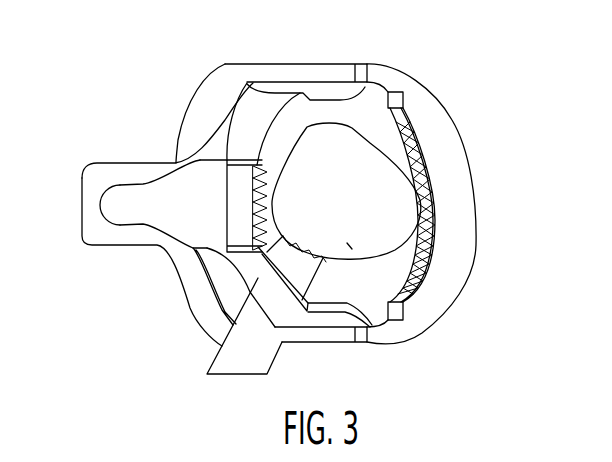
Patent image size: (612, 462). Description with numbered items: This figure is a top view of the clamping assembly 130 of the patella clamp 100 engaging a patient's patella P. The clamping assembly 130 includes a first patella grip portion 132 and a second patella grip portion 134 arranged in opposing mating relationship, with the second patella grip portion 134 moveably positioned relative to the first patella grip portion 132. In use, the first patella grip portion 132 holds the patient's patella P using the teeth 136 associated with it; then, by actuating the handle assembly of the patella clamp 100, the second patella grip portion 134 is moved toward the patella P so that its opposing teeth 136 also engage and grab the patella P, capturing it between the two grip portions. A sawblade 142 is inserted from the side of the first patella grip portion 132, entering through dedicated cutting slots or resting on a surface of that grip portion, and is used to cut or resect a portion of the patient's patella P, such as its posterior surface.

The patella clamp 100 is at (82, 180).
The clamping assembly 130 is at (458, 65).
The first patella grip portion 132 is at (439, 293).
The second patella grip portion 134 is at (247, 289).
The teeth 136 is at (253, 177).
The sawblade 142 is at (233, 364).
The patella P is at (349, 246).